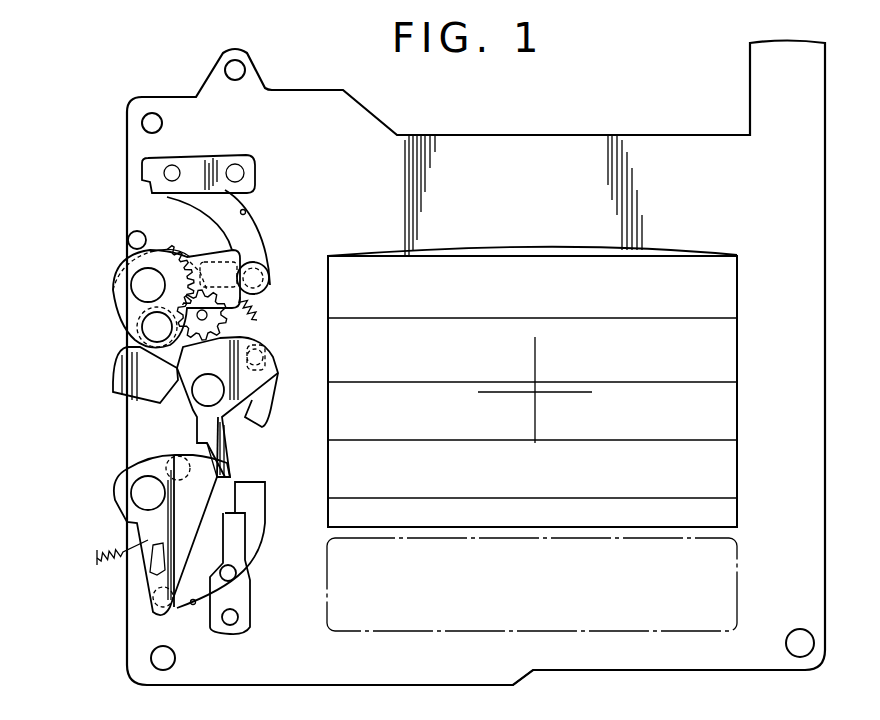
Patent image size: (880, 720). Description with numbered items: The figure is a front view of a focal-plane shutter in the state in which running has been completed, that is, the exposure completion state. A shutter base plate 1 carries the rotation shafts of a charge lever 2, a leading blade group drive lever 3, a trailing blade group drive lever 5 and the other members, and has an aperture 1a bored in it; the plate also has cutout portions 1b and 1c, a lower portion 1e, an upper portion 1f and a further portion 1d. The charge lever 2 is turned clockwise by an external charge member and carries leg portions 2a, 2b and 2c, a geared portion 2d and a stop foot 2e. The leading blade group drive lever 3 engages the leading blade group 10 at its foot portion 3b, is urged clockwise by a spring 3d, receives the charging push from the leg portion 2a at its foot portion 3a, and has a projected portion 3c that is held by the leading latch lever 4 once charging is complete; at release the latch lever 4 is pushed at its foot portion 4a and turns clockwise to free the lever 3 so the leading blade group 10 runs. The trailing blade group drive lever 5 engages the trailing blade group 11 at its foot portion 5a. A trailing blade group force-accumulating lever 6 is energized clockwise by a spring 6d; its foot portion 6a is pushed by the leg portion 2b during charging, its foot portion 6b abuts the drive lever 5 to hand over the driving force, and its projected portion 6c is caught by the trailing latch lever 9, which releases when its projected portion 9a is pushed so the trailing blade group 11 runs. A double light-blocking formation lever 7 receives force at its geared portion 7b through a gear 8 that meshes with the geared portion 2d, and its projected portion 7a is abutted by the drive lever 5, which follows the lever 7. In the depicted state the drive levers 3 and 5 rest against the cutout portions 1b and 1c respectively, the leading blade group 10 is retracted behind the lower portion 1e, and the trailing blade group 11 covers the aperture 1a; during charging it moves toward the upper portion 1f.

The shutter base plate 1 is at (496, 155).
The aperture 1a is at (522, 256).
The cutout portion 1b is at (193, 605).
The cutout portion 1c is at (246, 211).
The stopper 1d is at (267, 413).
The lower portion 1e is at (600, 622).
The upper portion 1f is at (696, 165).
The charge lever 2 is at (223, 417).
The leg portion 2a is at (228, 467).
The leg portion 2b is at (128, 375).
The leg portion 2c is at (263, 343).
The geared portion 2d is at (190, 408).
The stop foot 2e is at (279, 373).
The leading blade group drive lever 3 is at (115, 512).
The foot portion 3a is at (165, 458).
The foot portion 3b is at (153, 613).
The projected portion 3c is at (150, 577).
The spring 3d is at (97, 556).
The leading latch lever 4 is at (243, 625).
The foot portion 4a is at (233, 573).
The trailing blade group drive lever 5 is at (266, 256).
The foot portion 5a is at (264, 276).
The trailing blade group force-accumulating lever 6 is at (122, 318).
The foot portion 6a is at (150, 333).
The foot portion 6b is at (205, 270).
The projected portion 6c is at (234, 256).
The spring 6d is at (259, 301).
The double light-blocking formation lever 7 is at (150, 233).
The projected portion 7a is at (136, 243).
The geared portion 7b is at (160, 253).
The gear 8 is at (224, 314).
The trailing latch lever 9 is at (195, 165).
The projected portion 9a is at (165, 175).
The leading blade group 10 is at (730, 563).
The trailing blade group 11 is at (715, 352).